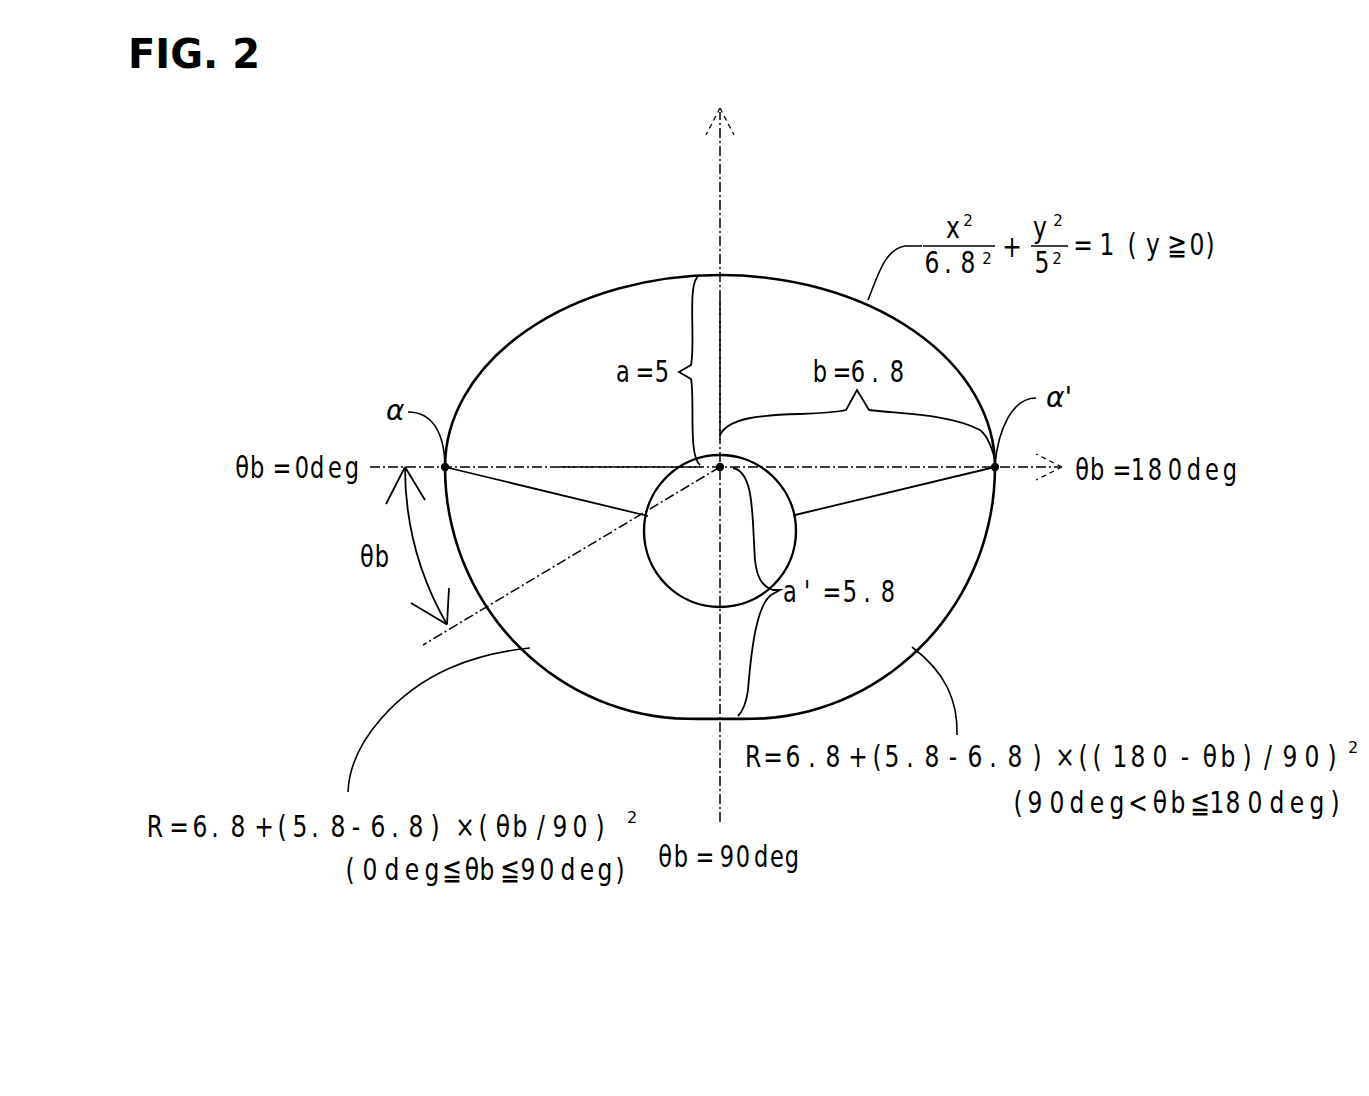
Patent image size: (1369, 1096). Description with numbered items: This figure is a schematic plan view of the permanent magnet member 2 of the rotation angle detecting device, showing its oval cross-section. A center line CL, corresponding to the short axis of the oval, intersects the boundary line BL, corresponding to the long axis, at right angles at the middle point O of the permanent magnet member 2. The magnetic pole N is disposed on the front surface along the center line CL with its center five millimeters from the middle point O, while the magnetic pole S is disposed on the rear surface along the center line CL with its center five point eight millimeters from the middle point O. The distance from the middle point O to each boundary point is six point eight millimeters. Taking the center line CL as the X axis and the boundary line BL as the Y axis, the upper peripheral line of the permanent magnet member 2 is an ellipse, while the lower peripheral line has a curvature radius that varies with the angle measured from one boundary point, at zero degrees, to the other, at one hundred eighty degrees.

The permanent magnet member 2 is at (484, 296).
The middle point O is at (720, 470).
The center line CL is at (722, 372).
The boundary line BL is at (648, 465).
The X axis X is at (719, 485).
The Y axis Y is at (708, 464).
The magnetic pole N is at (652, 323).
The magnetic pole S is at (687, 658).